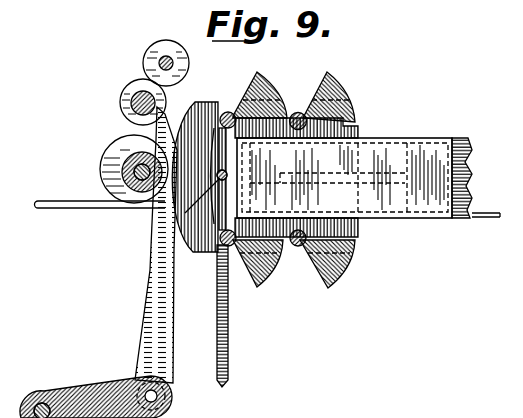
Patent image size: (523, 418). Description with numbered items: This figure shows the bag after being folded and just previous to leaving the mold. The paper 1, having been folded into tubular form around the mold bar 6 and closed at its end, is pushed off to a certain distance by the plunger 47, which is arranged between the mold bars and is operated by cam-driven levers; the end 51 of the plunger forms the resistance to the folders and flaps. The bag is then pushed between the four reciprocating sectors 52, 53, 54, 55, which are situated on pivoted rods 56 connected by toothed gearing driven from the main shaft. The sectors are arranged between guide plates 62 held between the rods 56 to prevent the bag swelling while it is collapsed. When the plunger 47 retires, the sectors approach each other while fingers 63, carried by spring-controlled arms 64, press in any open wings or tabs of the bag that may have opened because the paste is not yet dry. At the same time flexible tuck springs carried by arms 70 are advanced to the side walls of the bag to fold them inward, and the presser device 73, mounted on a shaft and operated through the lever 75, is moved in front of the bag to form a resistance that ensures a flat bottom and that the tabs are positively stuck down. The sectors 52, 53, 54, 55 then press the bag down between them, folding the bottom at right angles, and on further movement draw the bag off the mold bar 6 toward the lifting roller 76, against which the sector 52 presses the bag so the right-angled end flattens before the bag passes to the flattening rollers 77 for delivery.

The paper 1 is at (432, 152).
The mold bar 6 is at (460, 146).
The plunger 47 is at (487, 213).
The end 51 is at (362, 146).
The reciprocating sector 52 is at (268, 92).
The reciprocating sector 53 is at (352, 100).
The reciprocating sector 54 is at (262, 272).
The reciprocating sector 55 is at (340, 268).
The pivoted rod 56 is at (228, 111).
The guide plate 62 is at (181, 115).
The finger 63 is at (219, 174).
The arm 64 is at (214, 328).
The arm 70 is at (85, 208).
The presser device 73 is at (165, 204).
The lever 75 is at (103, 390).
The lifting roller 76 is at (107, 160).
The flattening rollers 77 is at (143, 65).